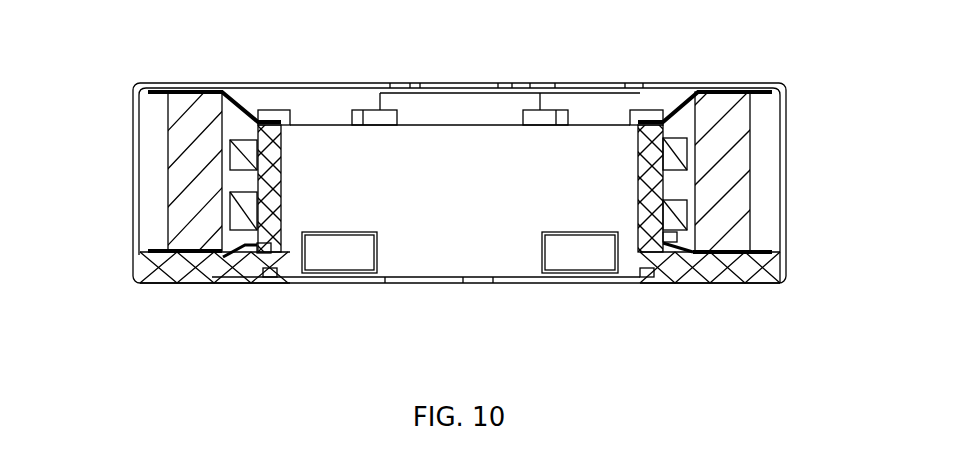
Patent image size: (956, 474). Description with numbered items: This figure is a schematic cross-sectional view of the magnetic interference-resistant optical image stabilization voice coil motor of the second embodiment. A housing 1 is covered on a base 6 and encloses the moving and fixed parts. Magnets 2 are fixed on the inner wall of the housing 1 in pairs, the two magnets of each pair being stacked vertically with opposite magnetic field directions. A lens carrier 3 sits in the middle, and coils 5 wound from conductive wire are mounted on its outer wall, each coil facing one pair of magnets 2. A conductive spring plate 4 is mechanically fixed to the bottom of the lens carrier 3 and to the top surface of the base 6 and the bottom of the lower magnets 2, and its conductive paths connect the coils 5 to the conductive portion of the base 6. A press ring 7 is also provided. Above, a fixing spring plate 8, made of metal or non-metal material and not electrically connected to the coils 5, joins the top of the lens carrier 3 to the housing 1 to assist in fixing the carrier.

The housing 1 is at (133, 130).
The magnets 2 is at (735, 122).
The lens carrier 3 is at (637, 150).
The conductive spring plate 4 is at (190, 257).
The coils 5 is at (677, 148).
The base 6 is at (698, 265).
The press ring 7 is at (258, 262).
The fixing spring plate 8 is at (247, 105).